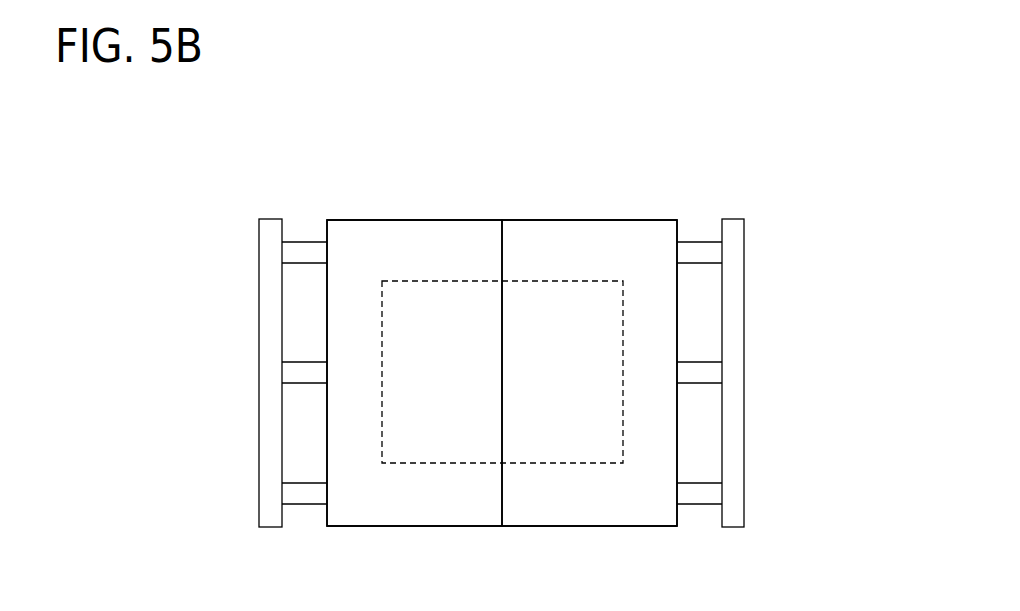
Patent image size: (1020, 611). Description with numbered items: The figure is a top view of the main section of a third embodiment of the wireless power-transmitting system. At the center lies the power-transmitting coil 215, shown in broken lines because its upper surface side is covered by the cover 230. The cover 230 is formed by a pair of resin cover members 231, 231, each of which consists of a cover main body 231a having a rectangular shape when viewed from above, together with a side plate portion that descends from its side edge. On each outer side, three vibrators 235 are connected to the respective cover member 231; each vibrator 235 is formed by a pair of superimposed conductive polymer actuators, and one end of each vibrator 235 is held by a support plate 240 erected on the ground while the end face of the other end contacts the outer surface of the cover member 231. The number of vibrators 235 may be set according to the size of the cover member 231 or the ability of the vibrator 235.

The power-transmitting coil 215 is at (560, 463).
The cover 230 is at (543, 158).
The cover member 231 is at (470, 228).
The cover main body 231a is at (393, 240).
The vibrator 235 is at (303, 247).
The support plate 240 is at (268, 322).